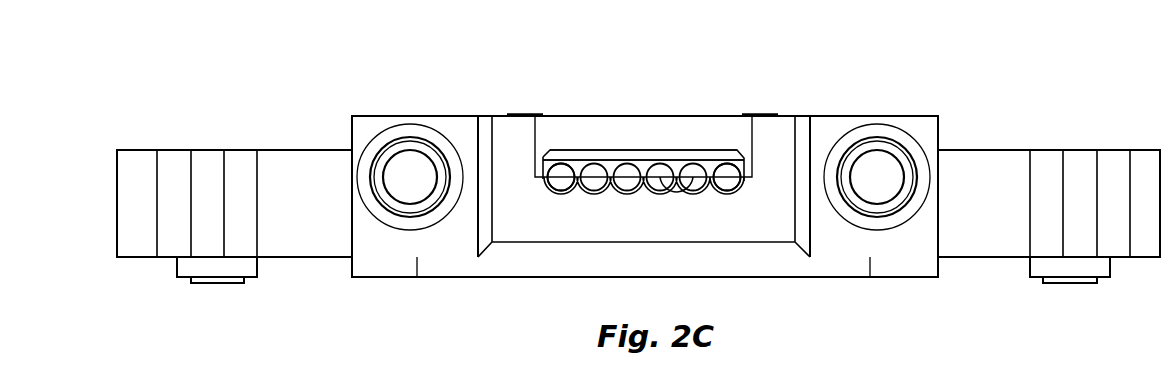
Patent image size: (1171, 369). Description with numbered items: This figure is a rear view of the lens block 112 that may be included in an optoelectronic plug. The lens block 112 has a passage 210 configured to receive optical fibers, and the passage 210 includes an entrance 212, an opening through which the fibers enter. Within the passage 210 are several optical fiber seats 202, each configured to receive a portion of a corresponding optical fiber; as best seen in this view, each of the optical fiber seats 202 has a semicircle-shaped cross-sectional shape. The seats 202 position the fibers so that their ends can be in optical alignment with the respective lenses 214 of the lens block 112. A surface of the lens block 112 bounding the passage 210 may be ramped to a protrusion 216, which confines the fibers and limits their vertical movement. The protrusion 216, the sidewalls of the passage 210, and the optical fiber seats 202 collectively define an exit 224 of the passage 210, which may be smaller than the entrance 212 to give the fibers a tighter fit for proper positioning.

The lens block 112 is at (290, 65).
The optical fiber seats 202 is at (620, 192).
The passage 210 is at (580, 163).
The entrance 212 is at (618, 150).
The lenses 214 is at (727, 168).
The protrusion 216 is at (645, 155).
The exit 224 is at (677, 178).